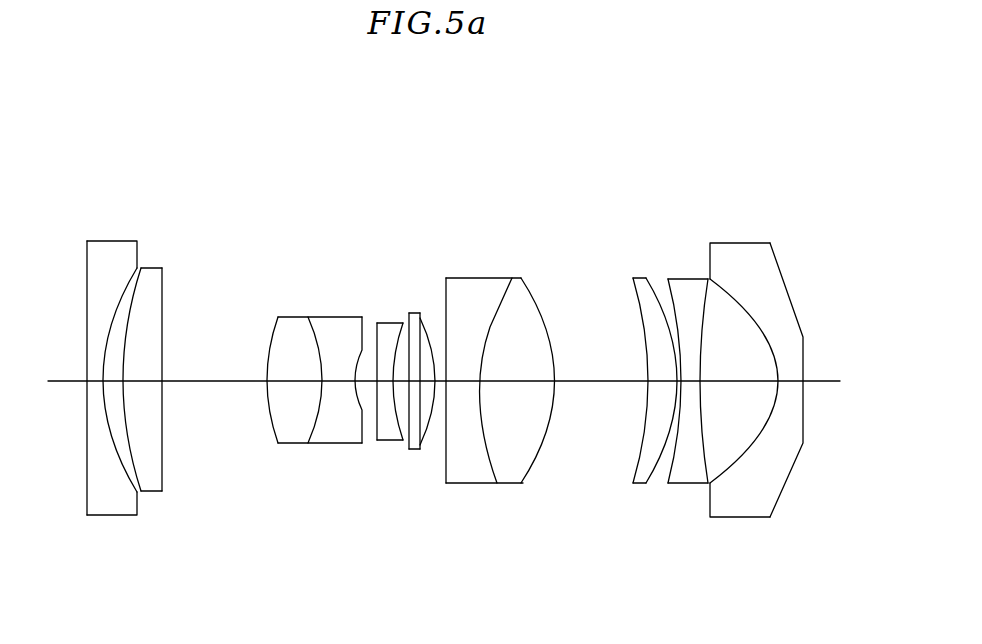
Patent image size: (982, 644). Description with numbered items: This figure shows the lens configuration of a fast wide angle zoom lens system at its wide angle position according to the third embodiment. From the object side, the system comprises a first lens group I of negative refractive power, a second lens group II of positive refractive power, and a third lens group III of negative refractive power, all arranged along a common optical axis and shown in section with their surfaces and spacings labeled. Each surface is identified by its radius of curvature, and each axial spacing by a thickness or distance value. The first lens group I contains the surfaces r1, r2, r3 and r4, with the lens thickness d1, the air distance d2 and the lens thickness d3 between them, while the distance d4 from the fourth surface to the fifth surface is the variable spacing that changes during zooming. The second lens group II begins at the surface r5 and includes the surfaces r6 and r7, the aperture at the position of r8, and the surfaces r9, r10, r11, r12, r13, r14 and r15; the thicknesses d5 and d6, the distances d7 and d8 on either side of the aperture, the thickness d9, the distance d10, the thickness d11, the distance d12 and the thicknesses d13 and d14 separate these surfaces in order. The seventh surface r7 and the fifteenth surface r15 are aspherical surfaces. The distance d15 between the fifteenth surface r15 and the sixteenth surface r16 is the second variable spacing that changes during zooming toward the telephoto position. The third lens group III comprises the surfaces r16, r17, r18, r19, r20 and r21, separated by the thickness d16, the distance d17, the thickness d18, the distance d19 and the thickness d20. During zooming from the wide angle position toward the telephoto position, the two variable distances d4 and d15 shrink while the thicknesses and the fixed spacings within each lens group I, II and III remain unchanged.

The first lens group I is at (203, 194).
The second lens group II is at (612, 113).
The third lens group III is at (618, 201).
The radius of curvature of first surface r1 is at (87, 363).
The radius of curvature of second surface r2 is at (105, 362).
The radius of curvature of third surface r3 is at (125, 362).
The radius of curvature of fourth surface r4 is at (163, 362).
The radius of curvature of fifth surface r5 is at (268, 345).
The radius of curvature of sixth surface r6 is at (309, 318).
The radius of curvature of seventh surface r7 is at (362, 318).
The aperture surface r8 is at (377, 323).
The radius of curvature of ninth surface r9 is at (403, 323).
The radius of curvature of tenth surface r10 is at (417, 313).
The radius of curvature of eleventh surface r11 is at (408, 315).
The radius of curvature of twelfth surface r12 is at (423, 315).
The radius of curvature of thirteenth surface r13 is at (446, 312).
The radius of curvature of fourteenth surface r14 is at (513, 278).
The radius of curvature of fifteenth surface r15 is at (539, 295).
The radius of curvature of sixteenth surface r16 is at (637, 308).
The radius of curvature of seventeenth surface r17 is at (652, 290).
The radius of curvature of eighteenth surface r18 is at (673, 317).
The radius of curvature of nineteenth surface r19 is at (703, 327).
The radius of curvature of twentieth surface r20 is at (748, 307).
The radius of curvature of twenty-first surface r21 is at (804, 335).
The lens thickness d1 is at (94, 381).
The distance between lenses d2 is at (113, 381).
The lens thickness d3 is at (143, 381).
The distance between lenses d4 is at (208, 381).
The lens thickness d5 is at (283, 381).
The lens thickness d6 is at (343, 381).
The distance between lenses d7 is at (367, 381).
The distance between lenses d8 is at (385, 381).
The lens thickness d9 is at (400, 381).
The distance between lenses d10 is at (413, 381).
The lens thickness d11 is at (420, 381).
The distance between lenses d12 is at (443, 381).
The lens thickness d13 is at (463, 381).
The lens thickness d14 is at (516, 381).
The distance between lenses d15 is at (600, 381).
The lens thickness d16 is at (663, 381).
The distance between lenses d17 is at (678, 381).
The lens thickness d18 is at (688, 381).
The distance between lenses d19 is at (758, 381).
The lens thickness d20 is at (795, 381).